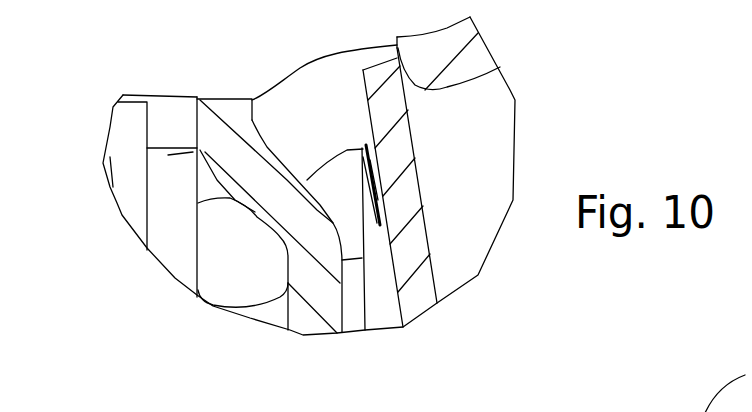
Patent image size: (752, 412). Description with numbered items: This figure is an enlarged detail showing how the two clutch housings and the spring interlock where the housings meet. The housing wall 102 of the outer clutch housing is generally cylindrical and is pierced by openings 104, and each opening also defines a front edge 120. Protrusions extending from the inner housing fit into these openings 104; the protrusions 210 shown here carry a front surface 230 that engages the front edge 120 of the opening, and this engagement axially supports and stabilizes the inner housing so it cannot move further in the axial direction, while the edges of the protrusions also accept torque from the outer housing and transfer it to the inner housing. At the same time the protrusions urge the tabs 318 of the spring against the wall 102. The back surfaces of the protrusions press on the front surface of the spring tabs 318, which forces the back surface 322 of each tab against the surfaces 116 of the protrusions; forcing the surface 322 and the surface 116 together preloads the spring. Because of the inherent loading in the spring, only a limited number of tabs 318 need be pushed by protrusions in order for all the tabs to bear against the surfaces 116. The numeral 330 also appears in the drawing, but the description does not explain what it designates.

The housing wall 102 is at (167, 95).
The openings 104 is at (274, 81).
The surfaces of the protrusions 116 is at (409, 79).
The front edges 120 is at (196, 118).
The protrusions 210 is at (320, 310).
The front surfaces of protrusions 230 is at (204, 131).
The tabs of spring 318 is at (417, 297).
The back surface of spring tabs 322 is at (394, 80).
The member 330 is at (702, 9).